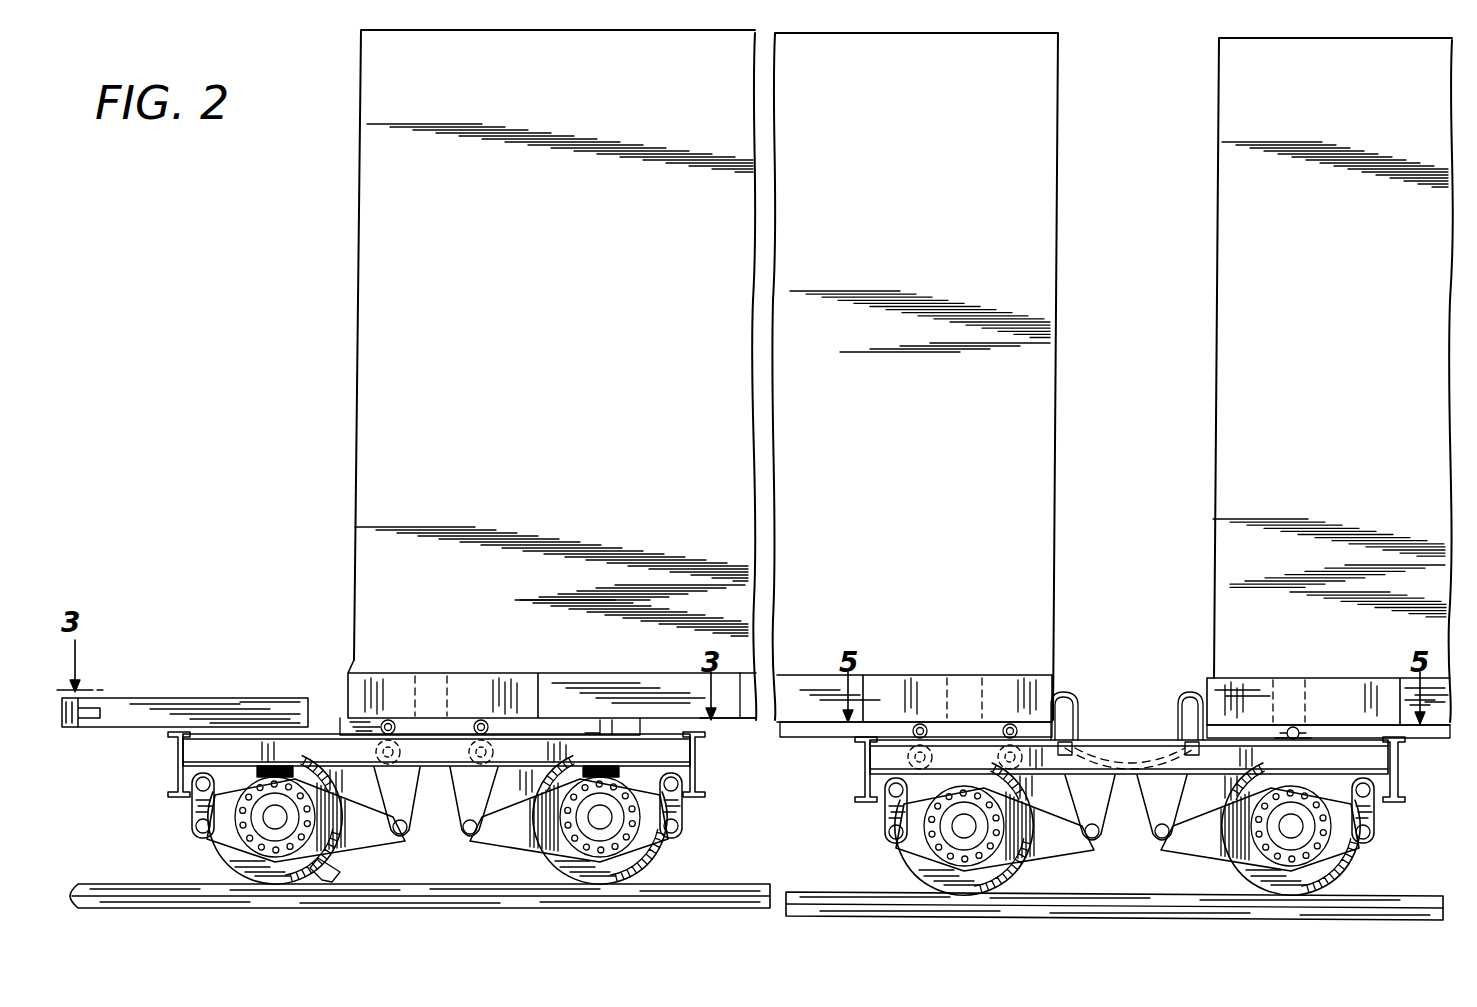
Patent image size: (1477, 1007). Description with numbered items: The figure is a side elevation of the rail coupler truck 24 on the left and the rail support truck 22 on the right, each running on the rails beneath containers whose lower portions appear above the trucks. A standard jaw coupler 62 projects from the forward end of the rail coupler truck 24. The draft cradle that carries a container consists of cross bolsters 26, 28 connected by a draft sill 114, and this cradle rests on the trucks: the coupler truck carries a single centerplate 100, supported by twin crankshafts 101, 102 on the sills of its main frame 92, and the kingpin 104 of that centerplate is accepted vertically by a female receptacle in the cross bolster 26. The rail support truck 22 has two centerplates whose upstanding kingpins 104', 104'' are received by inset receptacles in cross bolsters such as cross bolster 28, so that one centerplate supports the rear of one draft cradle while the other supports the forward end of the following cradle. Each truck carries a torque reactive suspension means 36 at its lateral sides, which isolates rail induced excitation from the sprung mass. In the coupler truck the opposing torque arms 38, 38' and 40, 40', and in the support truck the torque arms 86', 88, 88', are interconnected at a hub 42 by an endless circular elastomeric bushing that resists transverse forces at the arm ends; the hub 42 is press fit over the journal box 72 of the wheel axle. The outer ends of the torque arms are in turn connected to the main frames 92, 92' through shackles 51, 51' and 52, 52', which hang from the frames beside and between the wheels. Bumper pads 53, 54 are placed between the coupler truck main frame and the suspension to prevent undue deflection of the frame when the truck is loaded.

The rail support truck 22 is at (1462, 830).
The rail coupler truck 24 is at (172, 818).
The cross bolster 26 is at (520, 673).
The cross bolster 28 is at (903, 676).
The torque reactive suspension means 36 is at (492, 866).
The opposing torque arm 38 is at (231, 820).
The opposing torque arm 38' is at (638, 820).
The opposing torque arm 40 is at (310, 825).
The opposing torque arm 40' is at (569, 860).
The hub 42 is at (252, 848).
The shackle 51 is at (763, 798).
The shackle 51' is at (704, 805).
The shackle 52 is at (756, 803).
The shackle 52' is at (818, 819).
The bumper pad 53 is at (268, 766).
The bumper pad 54 is at (605, 766).
The standard jaw coupler 62 is at (150, 690).
The journal box 72 is at (334, 866).
The torque arm 86' is at (1325, 854).
The torque arm 88 is at (997, 864).
The torque arm 88' is at (1260, 866).
The main frame 92 is at (455, 764).
The main frame 92' is at (1111, 769).
The centerplate 100 is at (415, 718).
The crankshaft 101 is at (488, 722).
The crankshaft 102 is at (382, 722).
The kingpin 104 is at (442, 663).
The kingpin 104' is at (983, 680).
The kingpin 104'' is at (1310, 684).
The draft sill 114 is at (756, 720).